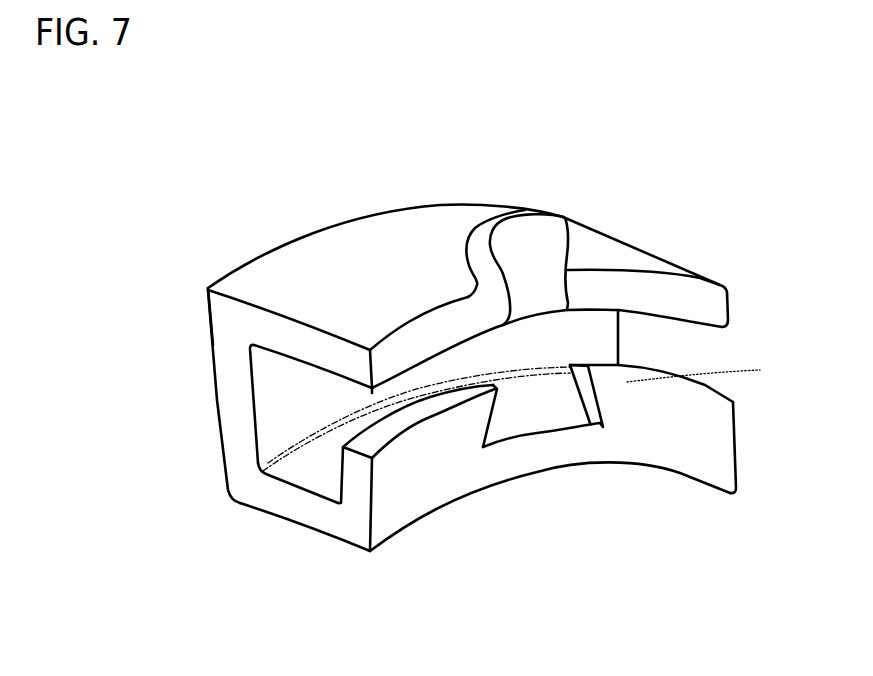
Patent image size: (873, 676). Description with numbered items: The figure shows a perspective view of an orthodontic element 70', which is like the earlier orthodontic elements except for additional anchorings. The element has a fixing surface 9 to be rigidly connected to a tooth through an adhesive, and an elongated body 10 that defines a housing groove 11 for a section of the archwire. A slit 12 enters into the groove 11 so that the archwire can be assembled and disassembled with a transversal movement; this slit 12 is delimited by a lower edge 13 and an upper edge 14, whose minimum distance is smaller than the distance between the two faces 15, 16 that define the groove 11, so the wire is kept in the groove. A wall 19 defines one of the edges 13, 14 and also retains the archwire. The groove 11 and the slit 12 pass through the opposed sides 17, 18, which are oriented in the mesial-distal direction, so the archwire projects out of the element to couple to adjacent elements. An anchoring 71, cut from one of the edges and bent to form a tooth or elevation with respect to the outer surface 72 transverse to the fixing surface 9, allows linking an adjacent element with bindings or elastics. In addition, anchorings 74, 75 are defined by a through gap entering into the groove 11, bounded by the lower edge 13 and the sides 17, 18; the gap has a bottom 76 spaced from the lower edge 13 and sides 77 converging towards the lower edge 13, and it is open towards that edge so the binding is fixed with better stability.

The fixing surface 9 is at (198, 353).
The elongated body 10 is at (219, 393).
The housing groove 11 is at (323, 478).
The slit 12 is at (692, 331).
The lower edge 13 is at (389, 422).
The upper edge 14 is at (470, 347).
The groove face 15 is at (295, 462).
The groove face 16 is at (282, 367).
The side 17 is at (748, 422).
The side 18 is at (210, 318).
The wall 19 is at (650, 430).
The orthodontic element 70' is at (576, 249).
The anchoring 71 is at (545, 229).
The outer surface 72 is at (363, 229).
The anchoring 74 is at (479, 407).
The anchoring 75 is at (611, 381).
The bottom 76 is at (542, 441).
The sides 77 is at (499, 416).